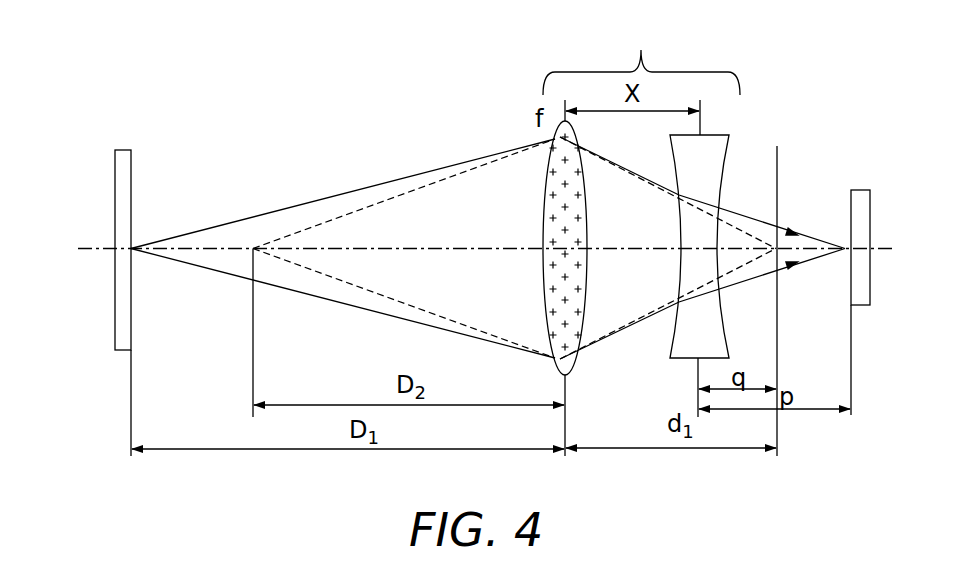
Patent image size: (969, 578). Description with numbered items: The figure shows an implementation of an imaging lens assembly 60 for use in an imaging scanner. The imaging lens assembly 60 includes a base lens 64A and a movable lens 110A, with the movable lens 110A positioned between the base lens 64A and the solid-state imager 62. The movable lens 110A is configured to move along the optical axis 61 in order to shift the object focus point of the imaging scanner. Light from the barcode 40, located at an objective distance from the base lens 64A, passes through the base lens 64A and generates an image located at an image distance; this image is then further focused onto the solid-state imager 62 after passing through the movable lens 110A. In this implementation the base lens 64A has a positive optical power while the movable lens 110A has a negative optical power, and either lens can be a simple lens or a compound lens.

The barcode 40 is at (133, 168).
The imaging lens assembly 60 is at (609, 201).
The optical axis 61 is at (103, 247).
The solid-state imager 62 is at (872, 203).
The base lens 64A is at (545, 189).
The movable lens 110A is at (681, 225).